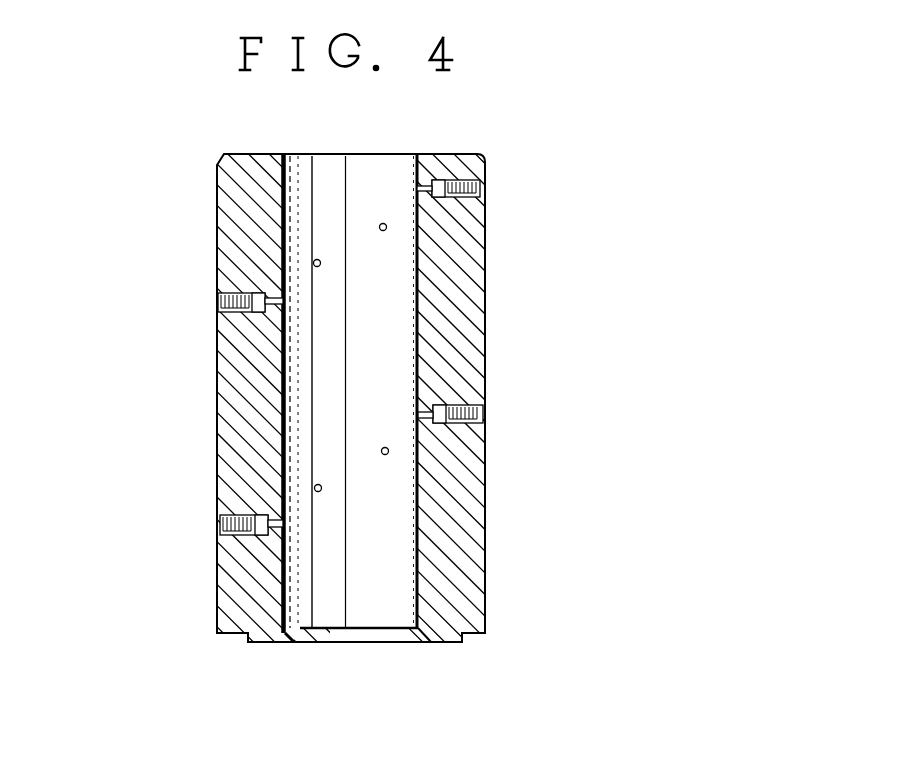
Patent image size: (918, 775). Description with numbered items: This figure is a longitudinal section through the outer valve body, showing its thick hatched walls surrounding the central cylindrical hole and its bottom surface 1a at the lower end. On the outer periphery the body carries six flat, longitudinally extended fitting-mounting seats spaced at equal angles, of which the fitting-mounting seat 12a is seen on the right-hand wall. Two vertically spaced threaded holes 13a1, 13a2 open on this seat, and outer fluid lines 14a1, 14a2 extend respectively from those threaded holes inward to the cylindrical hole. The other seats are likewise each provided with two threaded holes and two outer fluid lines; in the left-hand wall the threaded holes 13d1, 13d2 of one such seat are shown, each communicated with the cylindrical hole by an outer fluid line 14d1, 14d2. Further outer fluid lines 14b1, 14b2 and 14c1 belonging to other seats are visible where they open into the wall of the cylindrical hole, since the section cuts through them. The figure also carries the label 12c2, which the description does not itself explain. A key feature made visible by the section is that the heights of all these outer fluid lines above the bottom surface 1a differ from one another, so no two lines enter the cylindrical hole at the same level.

The bottom surface 1a is at (434, 643).
The fitting-mounting seat 12a is at (484, 295).
The positioning hole 12c2 is at (315, 486).
The threaded hole 13a1 is at (483, 187).
The threaded hole 13a2 is at (484, 412).
The threaded hole 13d1 is at (218, 299).
The threaded hole 13d2 is at (220, 530).
The outer fluid line 14a1 is at (418, 183).
The outer fluid line 14a2 is at (420, 408).
The outer fluid line 14b1 is at (387, 227).
The outer fluid line 14b2 is at (389, 452).
The outer fluid line 14c1 is at (314, 261).
The outer fluid line 14d1 is at (281, 302).
The outer fluid line 14d2 is at (283, 527).